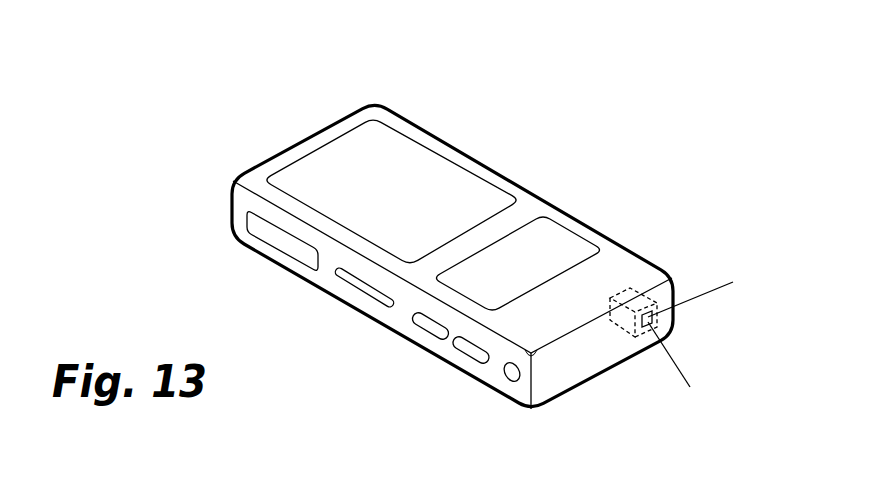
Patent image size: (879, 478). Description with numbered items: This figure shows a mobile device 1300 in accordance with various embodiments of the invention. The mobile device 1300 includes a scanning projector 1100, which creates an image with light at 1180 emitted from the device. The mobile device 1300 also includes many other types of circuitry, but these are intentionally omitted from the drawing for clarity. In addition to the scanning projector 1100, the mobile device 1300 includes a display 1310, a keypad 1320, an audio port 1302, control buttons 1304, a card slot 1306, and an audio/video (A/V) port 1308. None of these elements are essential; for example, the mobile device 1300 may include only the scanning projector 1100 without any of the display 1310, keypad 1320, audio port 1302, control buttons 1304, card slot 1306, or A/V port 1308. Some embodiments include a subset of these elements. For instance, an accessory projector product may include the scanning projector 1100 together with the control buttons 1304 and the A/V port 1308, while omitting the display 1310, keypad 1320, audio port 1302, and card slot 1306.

The mobile device 1300 is at (557, 135).
The audio port 1302 is at (512, 373).
The control buttons 1304 is at (460, 342).
The card slot 1306 is at (343, 278).
The audio/video (A/V) port 1308 is at (250, 225).
The display 1310 is at (555, 235).
The keypad 1320 is at (327, 162).
The scanning projector 1100 is at (630, 288).
The light 1180 is at (712, 328).